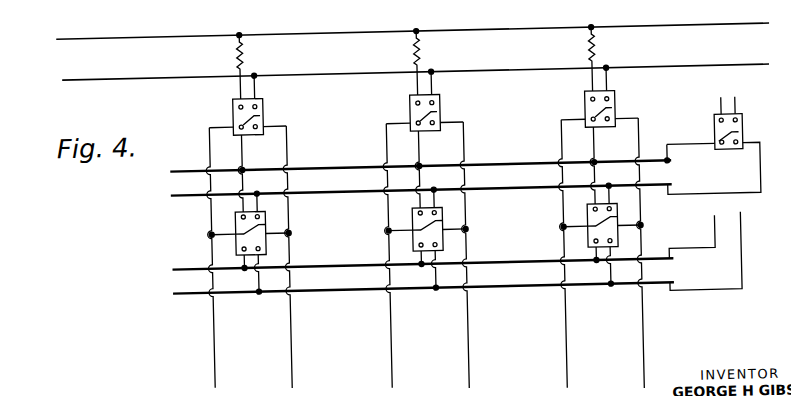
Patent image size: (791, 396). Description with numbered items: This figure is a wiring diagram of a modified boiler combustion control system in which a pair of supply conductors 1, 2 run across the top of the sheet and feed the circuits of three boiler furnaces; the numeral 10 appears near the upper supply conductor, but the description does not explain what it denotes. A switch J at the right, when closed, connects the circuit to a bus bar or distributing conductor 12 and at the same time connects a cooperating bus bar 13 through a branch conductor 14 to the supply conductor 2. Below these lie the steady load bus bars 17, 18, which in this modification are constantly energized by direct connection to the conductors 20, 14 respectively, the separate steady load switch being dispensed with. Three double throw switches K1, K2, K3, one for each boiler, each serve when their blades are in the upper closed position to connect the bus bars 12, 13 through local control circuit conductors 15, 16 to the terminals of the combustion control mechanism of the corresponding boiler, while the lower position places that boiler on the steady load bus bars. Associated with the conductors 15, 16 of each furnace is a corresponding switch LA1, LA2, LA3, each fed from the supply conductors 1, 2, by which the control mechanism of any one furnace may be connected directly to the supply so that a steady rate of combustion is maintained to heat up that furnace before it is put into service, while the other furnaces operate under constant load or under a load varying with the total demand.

The supply conductor 1 is at (748, 56).
The supply conductor 2 is at (692, 28).
The power supply circuit 10 is at (333, 0).
The bus bar or distributing conductor 12 is at (356, 145).
The cooperating bus bar 13 is at (344, 192).
The branch conductor 14 is at (740, 230).
The local control circuit conductor 15 is at (575, 348).
The local control circuit conductor 16 is at (641, 341).
The steady load bus bar 17 is at (363, 251).
The steady load bus bar 18 is at (331, 296).
The conductor 20 is at (712, 228).
The switch J is at (744, 129).
The double throw switch K1 is at (617, 245).
The double throw switch K2 is at (442, 245).
The double throw switch K3 is at (265, 245).
The switch LA1 is at (617, 104).
The switch LA2 is at (442, 104).
The switch LA3 is at (265, 104).